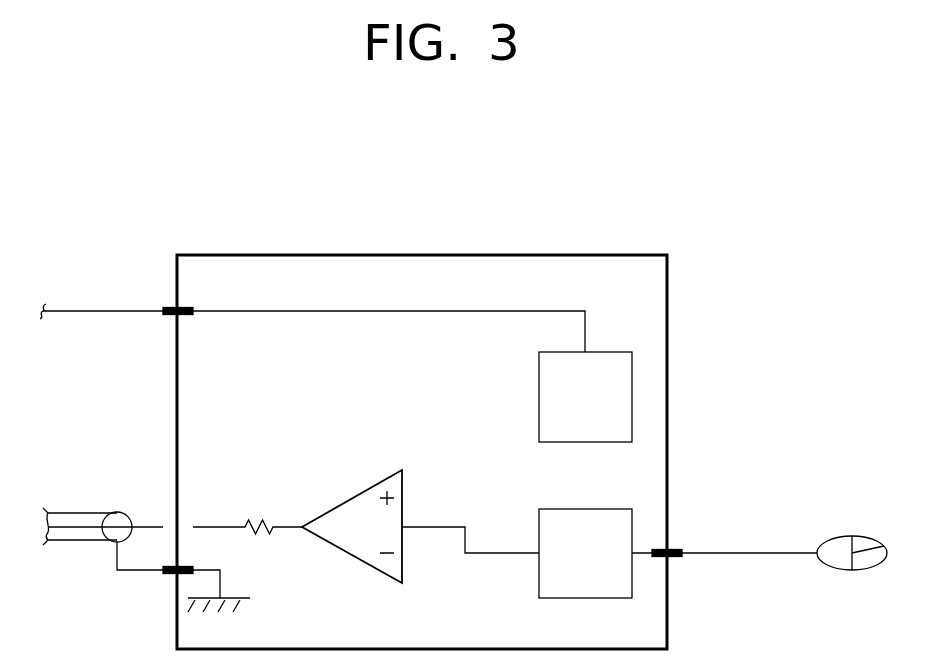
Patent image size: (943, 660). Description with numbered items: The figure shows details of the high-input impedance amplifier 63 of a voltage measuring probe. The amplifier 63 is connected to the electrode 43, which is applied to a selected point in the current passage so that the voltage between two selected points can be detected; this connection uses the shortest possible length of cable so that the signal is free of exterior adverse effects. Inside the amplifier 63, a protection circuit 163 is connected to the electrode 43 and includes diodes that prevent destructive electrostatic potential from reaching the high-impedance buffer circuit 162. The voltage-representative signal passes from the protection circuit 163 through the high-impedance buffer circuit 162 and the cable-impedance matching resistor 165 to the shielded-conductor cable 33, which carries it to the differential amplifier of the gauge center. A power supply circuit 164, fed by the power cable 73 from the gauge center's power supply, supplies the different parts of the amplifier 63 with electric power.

The high-input impedance amplifier 63 is at (598, 253).
The power cable 73 is at (101, 310).
The power supply circuit 164 is at (609, 415).
The protection circuit 163 is at (609, 572).
The high-impedance buffer circuit 162 is at (358, 492).
The impedance matching resistor 165 is at (259, 519).
The shielded-conductor cable 33 is at (80, 529).
The electrode 43 is at (843, 537).